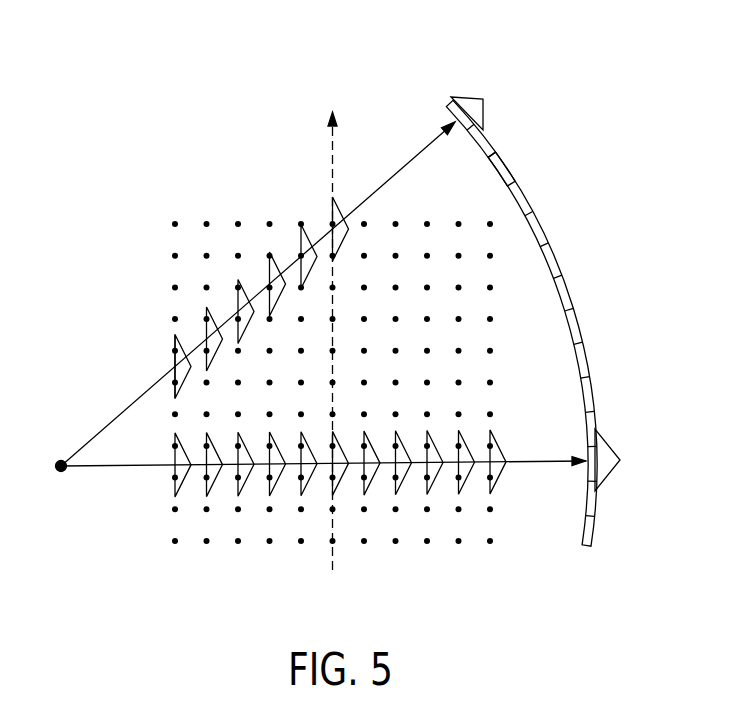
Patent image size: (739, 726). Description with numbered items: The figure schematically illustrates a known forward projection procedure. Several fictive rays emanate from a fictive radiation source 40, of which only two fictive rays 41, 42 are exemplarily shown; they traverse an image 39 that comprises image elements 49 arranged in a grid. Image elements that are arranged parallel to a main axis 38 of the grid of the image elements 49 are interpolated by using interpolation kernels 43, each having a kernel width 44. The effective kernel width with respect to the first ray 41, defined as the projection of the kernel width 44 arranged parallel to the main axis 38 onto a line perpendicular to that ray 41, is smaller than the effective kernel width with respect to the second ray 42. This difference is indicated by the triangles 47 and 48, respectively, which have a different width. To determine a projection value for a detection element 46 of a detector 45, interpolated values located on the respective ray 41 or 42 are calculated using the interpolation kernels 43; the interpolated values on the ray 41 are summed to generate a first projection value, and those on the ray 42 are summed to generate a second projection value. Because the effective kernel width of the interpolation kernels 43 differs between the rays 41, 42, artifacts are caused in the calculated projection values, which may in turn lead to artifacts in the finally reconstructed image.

The main axis 38 is at (335, 158).
The image 39 is at (305, 212).
The fictive radiation source 40 is at (61, 476).
The fictive ray 41 is at (97, 434).
The fictive ray 42 is at (115, 469).
The interpolation kernel 43 is at (167, 337).
The kernel width 44 is at (150, 338).
The detector 45 is at (533, 130).
The detection element 46 is at (530, 193).
The triangle 47 is at (472, 92).
The triangle 48 is at (608, 434).
The image elements 49 is at (160, 543).